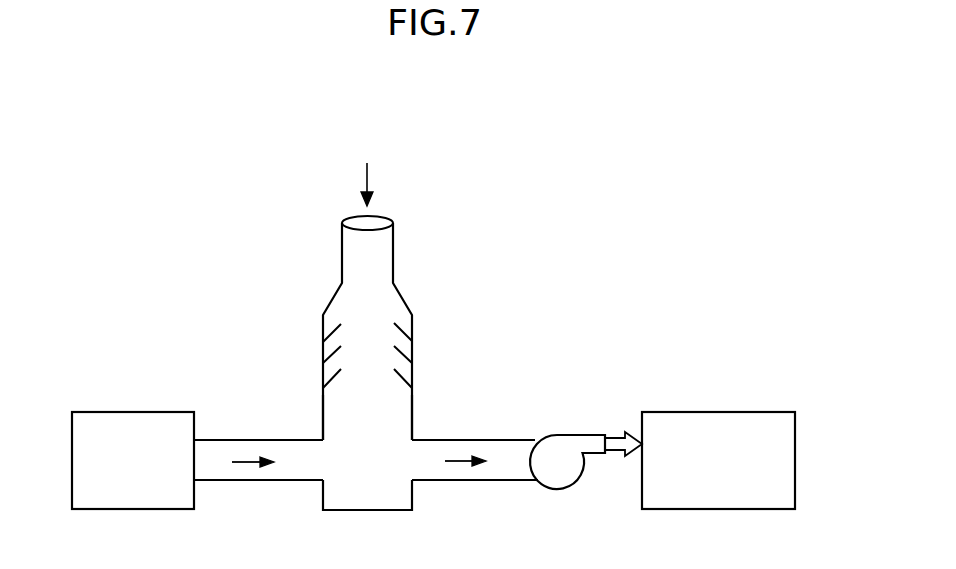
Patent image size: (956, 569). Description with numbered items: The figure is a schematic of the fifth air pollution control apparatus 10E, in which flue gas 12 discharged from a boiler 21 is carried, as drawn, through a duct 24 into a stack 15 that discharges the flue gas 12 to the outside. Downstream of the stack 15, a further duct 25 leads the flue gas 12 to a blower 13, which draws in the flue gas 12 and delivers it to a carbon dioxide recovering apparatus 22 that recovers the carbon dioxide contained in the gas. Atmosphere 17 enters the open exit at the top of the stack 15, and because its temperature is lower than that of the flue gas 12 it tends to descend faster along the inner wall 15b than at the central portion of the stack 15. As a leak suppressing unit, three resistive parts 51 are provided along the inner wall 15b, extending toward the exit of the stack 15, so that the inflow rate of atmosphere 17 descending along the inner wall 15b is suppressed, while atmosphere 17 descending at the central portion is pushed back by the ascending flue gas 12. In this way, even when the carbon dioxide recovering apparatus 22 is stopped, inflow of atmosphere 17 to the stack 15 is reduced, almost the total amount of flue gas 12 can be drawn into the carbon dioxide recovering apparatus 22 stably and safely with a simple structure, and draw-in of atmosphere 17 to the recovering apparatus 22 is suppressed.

The fifth air pollution control apparatus 10E is at (230, 151).
The flue gas 12 is at (250, 458).
The blower 13 is at (557, 488).
The stack 15 is at (342, 248).
The inner wall 15b is at (323, 403).
The atmosphere 17 is at (367, 175).
The boiler 21 is at (132, 412).
The CO2 recovering apparatus 22 is at (704, 412).
The flue gas duct from boiler 24 is at (240, 480).
The flue gas duct to blower 25 is at (495, 480).
The resistive parts 51 is at (408, 332).